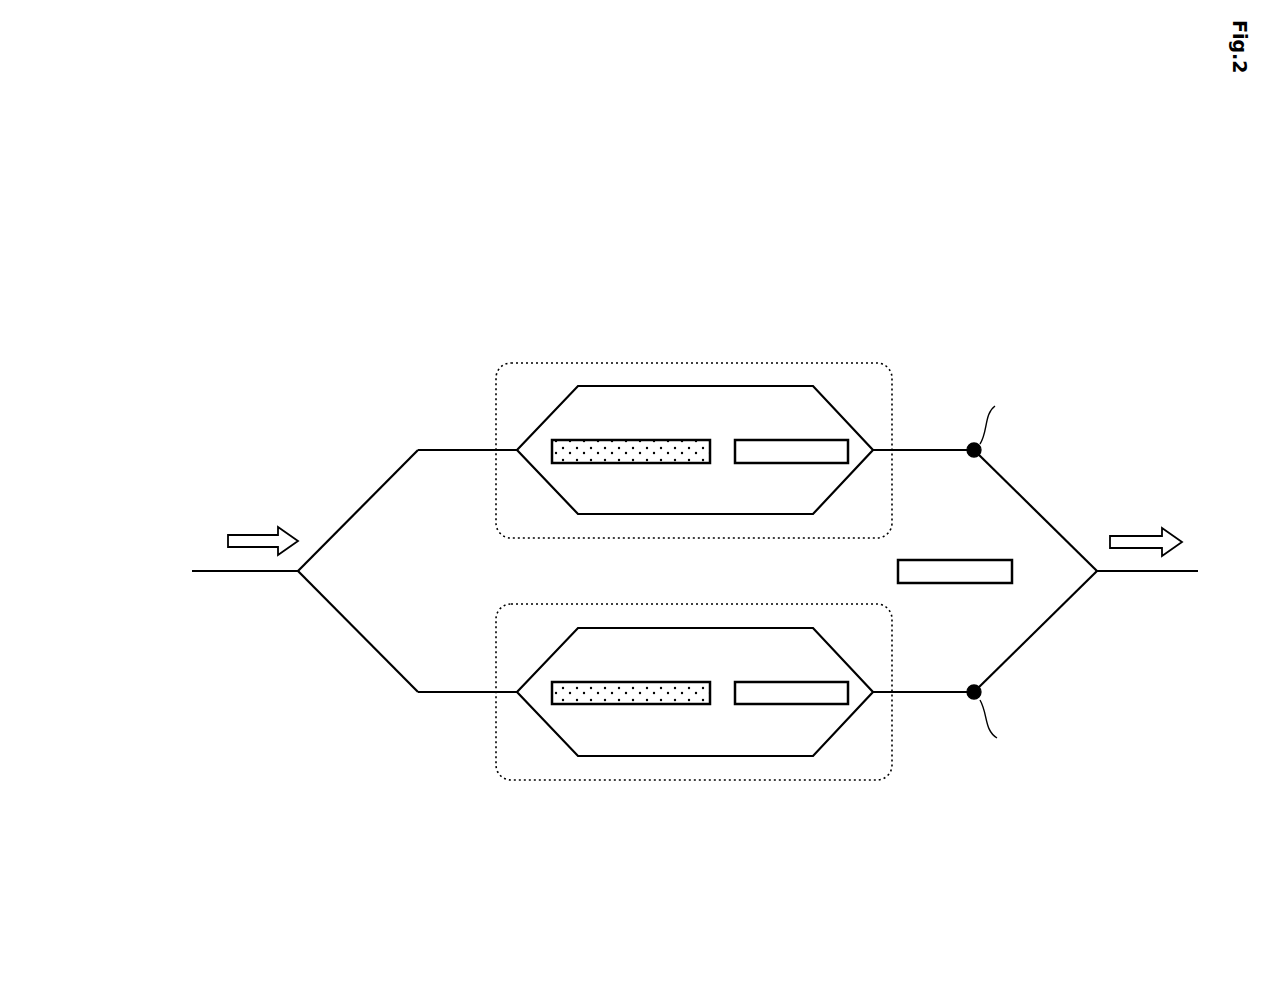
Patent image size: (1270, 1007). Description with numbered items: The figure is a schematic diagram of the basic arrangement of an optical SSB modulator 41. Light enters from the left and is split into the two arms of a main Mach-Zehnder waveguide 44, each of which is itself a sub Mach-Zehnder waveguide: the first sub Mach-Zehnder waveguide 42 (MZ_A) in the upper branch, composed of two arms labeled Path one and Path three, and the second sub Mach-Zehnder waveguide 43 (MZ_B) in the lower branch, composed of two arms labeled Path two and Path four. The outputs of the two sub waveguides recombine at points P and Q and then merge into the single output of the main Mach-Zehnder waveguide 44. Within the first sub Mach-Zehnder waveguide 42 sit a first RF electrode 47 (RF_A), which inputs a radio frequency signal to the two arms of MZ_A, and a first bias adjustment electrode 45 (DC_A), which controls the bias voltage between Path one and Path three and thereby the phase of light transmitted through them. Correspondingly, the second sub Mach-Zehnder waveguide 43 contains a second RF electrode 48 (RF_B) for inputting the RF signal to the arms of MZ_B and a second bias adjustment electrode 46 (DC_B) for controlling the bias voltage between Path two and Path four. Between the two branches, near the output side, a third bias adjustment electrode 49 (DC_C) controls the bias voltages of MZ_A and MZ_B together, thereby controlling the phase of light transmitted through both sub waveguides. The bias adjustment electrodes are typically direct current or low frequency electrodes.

The optical SSB modulator 41 is at (903, 332).
The first sub Mach-Zehnder waveguide 42 is at (522, 362).
The second sub Mach-Zehnder waveguide 43 is at (520, 780).
The main Mach-Zehnder waveguide 44 is at (1030, 507).
The first bias adjustment electrode 45 is at (772, 440).
The second bias adjustment electrode 46 is at (760, 704).
The first RF electrode 47 is at (625, 440).
The second RF electrode 48 is at (622, 704).
The third bias adjustment electrode 49 is at (927, 560).